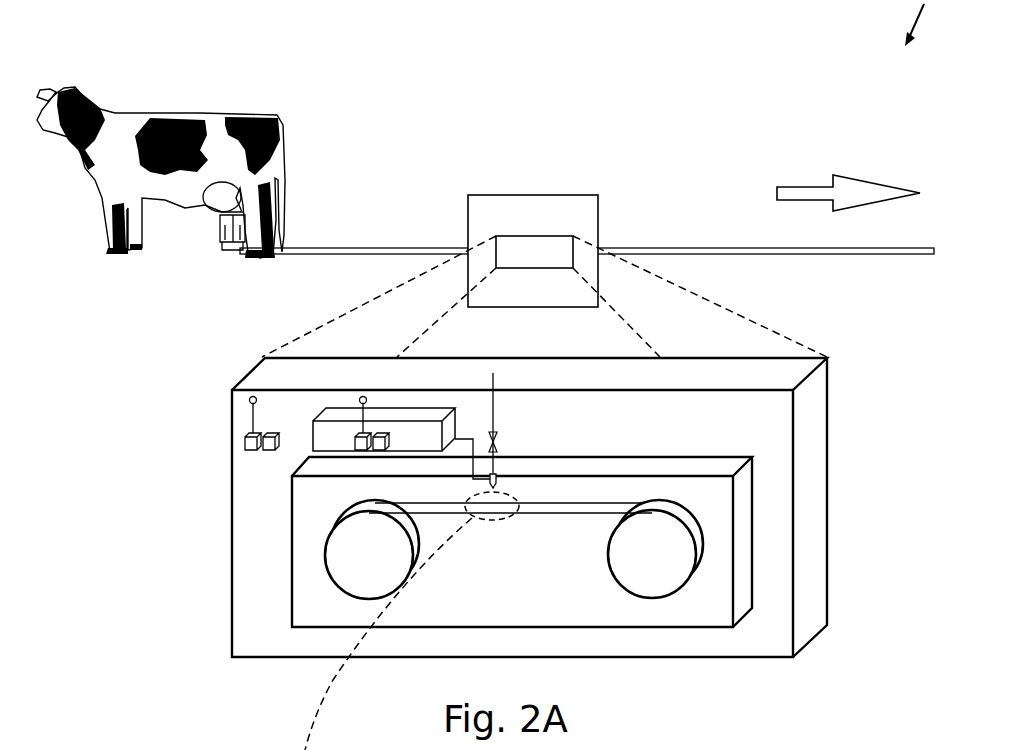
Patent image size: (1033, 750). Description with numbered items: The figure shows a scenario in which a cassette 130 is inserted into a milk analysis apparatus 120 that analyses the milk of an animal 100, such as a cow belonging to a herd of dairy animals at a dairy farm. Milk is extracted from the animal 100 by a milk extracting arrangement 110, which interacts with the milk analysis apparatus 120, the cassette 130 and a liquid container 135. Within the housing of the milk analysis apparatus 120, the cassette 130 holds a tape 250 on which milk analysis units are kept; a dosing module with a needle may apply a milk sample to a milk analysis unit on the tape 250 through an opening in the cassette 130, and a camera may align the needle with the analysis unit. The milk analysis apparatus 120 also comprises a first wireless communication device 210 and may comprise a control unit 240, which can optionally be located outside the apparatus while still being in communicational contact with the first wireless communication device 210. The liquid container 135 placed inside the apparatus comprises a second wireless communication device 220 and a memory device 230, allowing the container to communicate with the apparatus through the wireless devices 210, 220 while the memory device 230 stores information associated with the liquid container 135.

The animal 100 is at (272, 115).
The milk extracting arrangement 110 is at (578, 200).
The milk analysis apparatus 120 is at (807, 412).
The cassette 130 is at (742, 600).
The liquid container 135 is at (320, 443).
The first wireless communication device 210 is at (248, 437).
The second wireless communication device 220 is at (358, 433).
The memory device 230 is at (382, 433).
The control unit 240 is at (262, 448).
The tape 250 is at (533, 505).